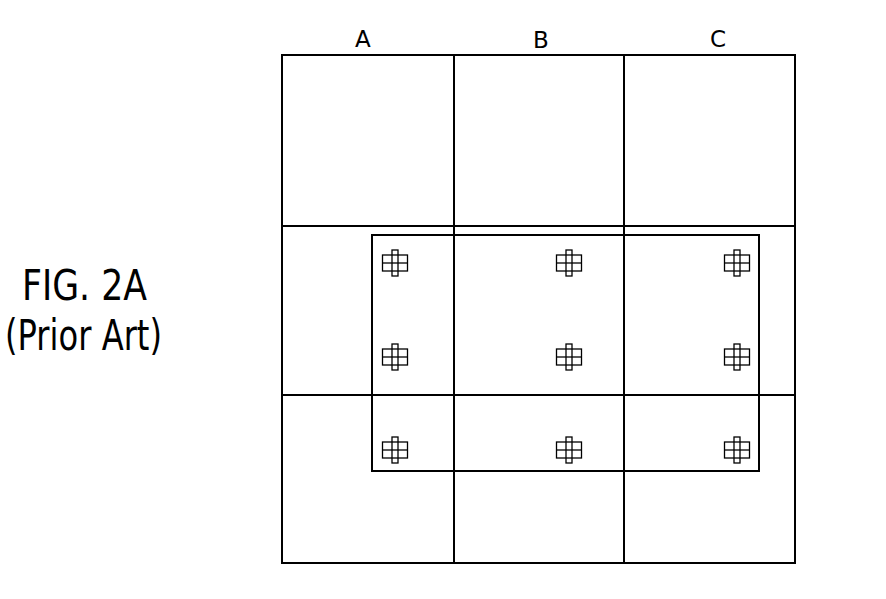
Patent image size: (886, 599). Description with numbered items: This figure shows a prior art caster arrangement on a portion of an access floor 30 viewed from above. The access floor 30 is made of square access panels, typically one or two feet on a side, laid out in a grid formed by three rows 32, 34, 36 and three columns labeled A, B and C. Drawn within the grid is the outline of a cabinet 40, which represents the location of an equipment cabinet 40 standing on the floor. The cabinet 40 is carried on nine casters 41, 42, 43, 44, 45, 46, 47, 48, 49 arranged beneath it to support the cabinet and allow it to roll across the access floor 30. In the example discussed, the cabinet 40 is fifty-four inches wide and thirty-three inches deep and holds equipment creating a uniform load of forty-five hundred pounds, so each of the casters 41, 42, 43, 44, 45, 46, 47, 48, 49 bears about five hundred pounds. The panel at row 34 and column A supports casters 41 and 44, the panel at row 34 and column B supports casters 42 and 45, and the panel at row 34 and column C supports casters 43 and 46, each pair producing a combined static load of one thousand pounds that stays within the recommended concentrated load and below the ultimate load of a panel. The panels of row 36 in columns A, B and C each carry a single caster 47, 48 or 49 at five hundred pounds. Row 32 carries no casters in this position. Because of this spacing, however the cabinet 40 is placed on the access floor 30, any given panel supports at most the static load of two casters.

The access floor 30 is at (282, 55).
The first row of access panels 32 is at (509, 179).
The second row of access panels 34 is at (510, 349).
The third row of access panels 36 is at (510, 514).
The cabinet 40 is at (760, 290).
The caster 41 is at (405, 270).
The caster 42 is at (571, 274).
The caster 43 is at (733, 274).
The caster 44 is at (405, 350).
The caster 45 is at (573, 343).
The caster 46 is at (735, 345).
The caster 47 is at (405, 440).
The caster 48 is at (572, 438).
The caster 49 is at (735, 440).